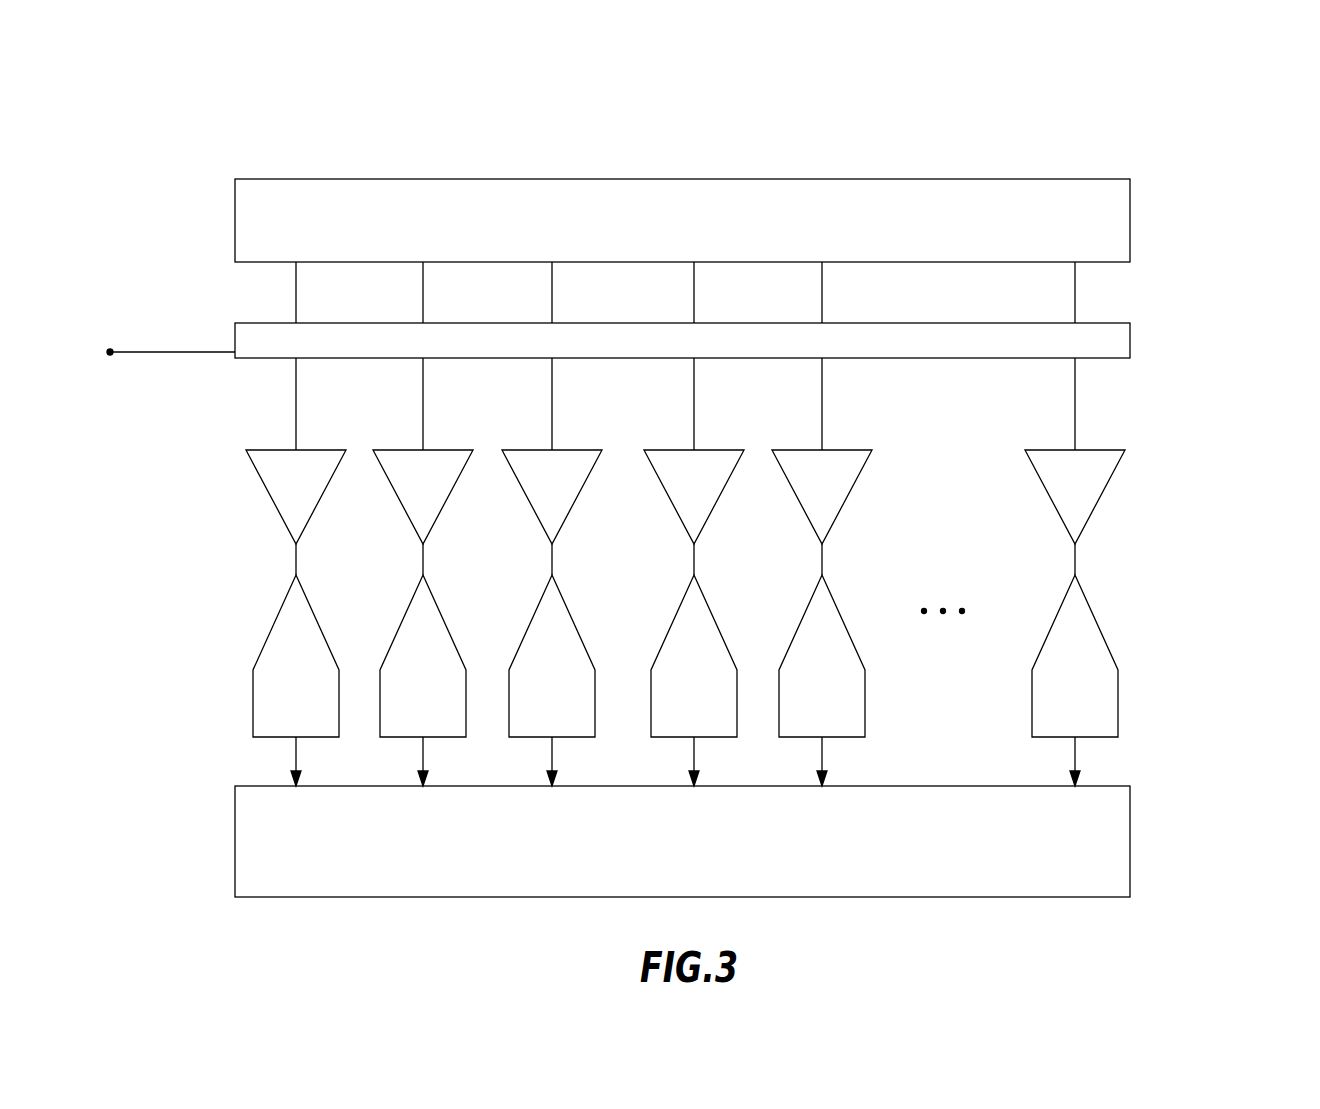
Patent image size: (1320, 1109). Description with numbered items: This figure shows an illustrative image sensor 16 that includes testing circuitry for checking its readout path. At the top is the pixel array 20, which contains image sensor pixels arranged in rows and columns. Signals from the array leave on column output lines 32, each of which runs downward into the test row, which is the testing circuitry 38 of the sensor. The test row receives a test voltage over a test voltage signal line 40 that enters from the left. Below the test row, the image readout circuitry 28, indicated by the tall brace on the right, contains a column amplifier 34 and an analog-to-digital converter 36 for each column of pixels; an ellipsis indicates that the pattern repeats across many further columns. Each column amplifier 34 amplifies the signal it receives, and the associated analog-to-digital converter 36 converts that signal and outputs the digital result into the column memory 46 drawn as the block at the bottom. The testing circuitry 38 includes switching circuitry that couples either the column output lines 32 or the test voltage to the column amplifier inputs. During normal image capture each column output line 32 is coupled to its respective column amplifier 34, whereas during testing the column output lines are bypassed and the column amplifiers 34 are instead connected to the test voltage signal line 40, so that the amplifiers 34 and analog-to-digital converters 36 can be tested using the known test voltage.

The image sensor 16 is at (1087, 140).
The pixel array 20 is at (993, 179).
The column output lines 32 is at (297, 272).
The testing circuitry 38 is at (1142, 363).
The test voltage signal line 40 is at (208, 352).
The column amplifiers 34 is at (266, 495).
The analog-to-digital converters 36 is at (277, 623).
The column memory 46 is at (1050, 897).
The image readout circuitry 28 is at (1219, 901).